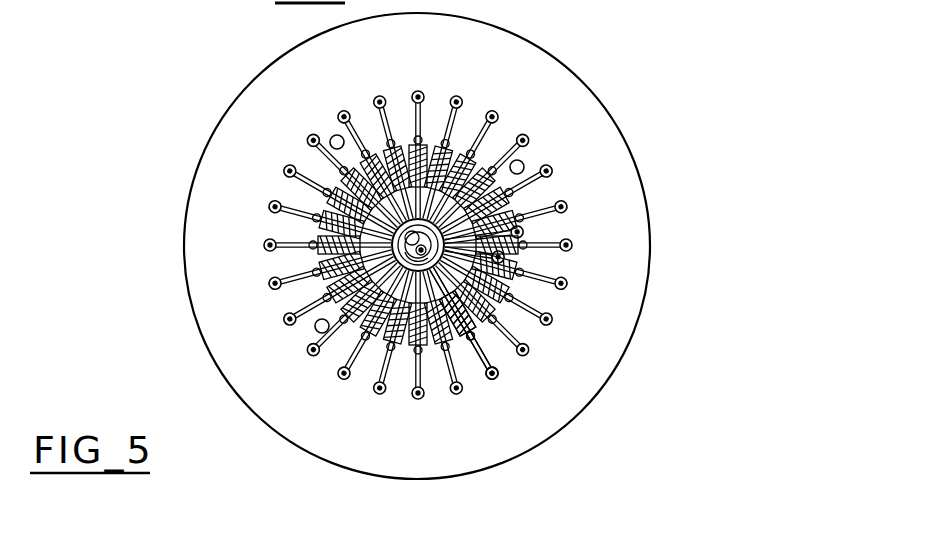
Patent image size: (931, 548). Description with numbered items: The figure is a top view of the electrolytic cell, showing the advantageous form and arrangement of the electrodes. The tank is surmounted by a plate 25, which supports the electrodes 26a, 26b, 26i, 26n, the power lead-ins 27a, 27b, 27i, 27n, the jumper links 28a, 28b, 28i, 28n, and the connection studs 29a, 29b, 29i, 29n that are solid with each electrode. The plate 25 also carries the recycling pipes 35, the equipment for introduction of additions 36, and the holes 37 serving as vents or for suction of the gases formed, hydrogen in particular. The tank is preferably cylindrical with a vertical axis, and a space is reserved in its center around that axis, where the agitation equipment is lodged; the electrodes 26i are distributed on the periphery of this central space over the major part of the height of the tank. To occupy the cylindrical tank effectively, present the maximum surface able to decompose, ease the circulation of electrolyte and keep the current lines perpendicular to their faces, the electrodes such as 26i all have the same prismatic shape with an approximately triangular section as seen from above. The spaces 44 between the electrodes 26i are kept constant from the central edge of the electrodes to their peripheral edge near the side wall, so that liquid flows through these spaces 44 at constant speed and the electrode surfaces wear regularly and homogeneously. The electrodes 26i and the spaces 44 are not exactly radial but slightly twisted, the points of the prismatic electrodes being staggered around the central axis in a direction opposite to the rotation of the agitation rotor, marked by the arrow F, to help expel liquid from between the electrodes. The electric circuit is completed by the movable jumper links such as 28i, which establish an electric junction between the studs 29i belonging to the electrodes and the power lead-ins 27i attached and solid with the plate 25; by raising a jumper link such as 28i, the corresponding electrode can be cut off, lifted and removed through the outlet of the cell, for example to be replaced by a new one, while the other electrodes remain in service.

The plate 25 is at (577, 89).
The electrode 26a is at (497, 378).
The electrode 26b is at (485, 305).
The electrode 26i is at (520, 232).
The electrode 26n is at (470, 147).
The power lead-in 27a is at (493, 378).
The power lead-in 27b is at (488, 330).
The power lead-in 27i is at (568, 247).
The power lead-in 27n is at (497, 115).
The jumper link 28a is at (474, 365).
The jumper link 28b is at (505, 375).
The jumper link 28i is at (562, 252).
The jumper link 28n is at (500, 123).
The stud 29a is at (445, 375).
The stud 29b is at (395, 378).
The stud 29i is at (510, 205).
The stud 29n is at (437, 110).
The recycling pipe 35 is at (522, 165).
The equipment for introduction of additions 36 is at (316, 327).
The hole 37 is at (332, 138).
The space 44 is at (332, 255).